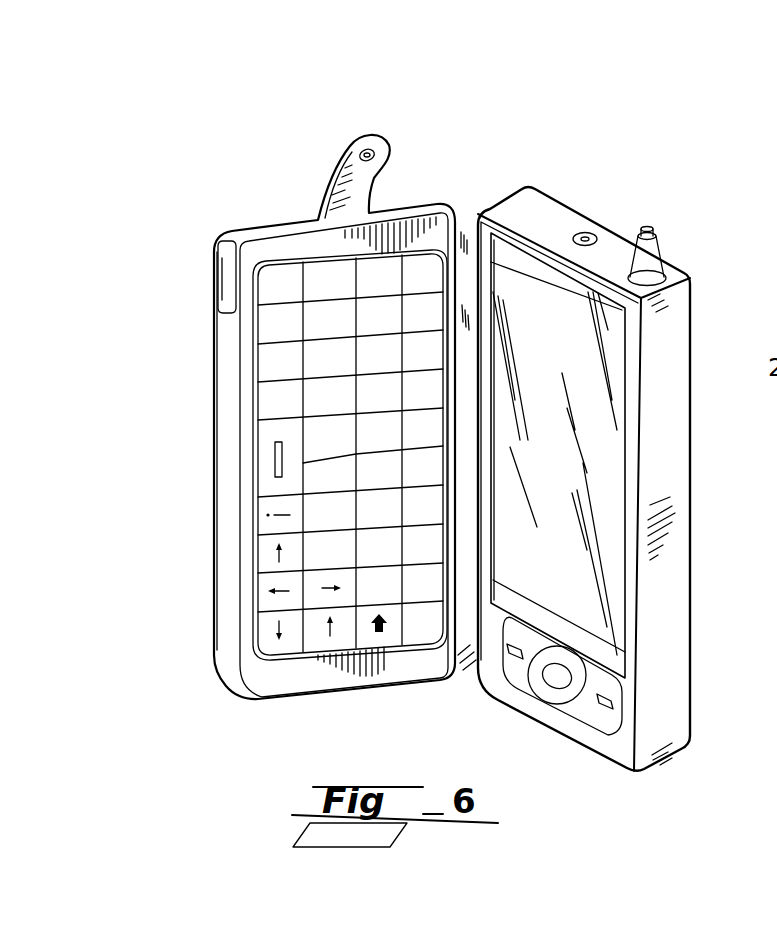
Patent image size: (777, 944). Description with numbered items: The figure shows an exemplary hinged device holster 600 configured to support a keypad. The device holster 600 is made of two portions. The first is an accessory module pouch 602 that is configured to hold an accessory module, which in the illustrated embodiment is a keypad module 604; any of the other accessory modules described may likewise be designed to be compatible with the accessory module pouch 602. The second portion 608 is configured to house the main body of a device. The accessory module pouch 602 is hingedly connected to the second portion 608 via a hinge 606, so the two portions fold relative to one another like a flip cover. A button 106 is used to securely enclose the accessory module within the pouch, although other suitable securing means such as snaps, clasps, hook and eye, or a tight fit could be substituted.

The device holster 600 is at (560, 114).
The accessory module pouch 602 is at (272, 188).
The keypad module 604 is at (262, 440).
The hinge 606 is at (465, 232).
The second portion 608 is at (644, 197).
The button 106 is at (374, 158).